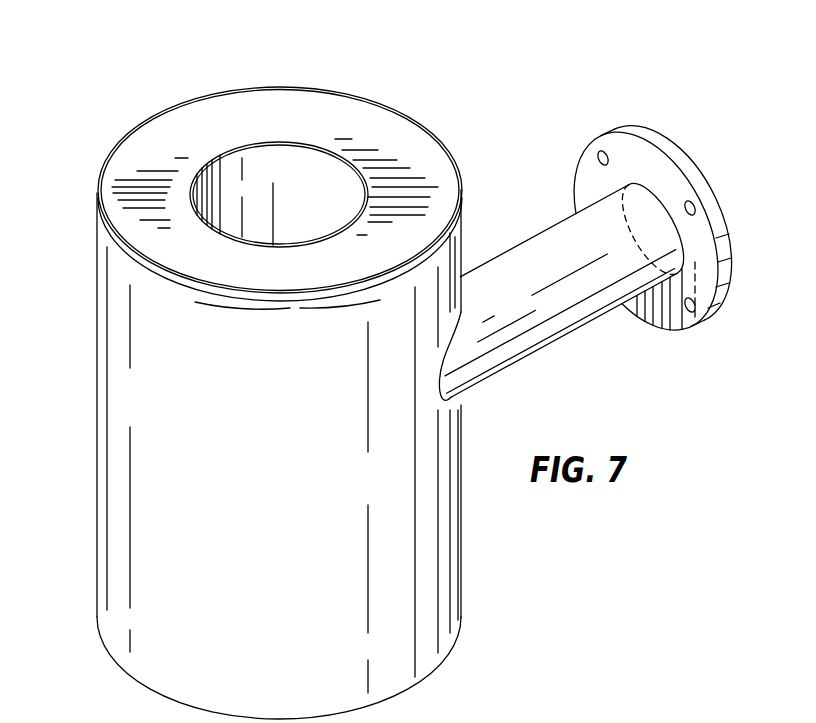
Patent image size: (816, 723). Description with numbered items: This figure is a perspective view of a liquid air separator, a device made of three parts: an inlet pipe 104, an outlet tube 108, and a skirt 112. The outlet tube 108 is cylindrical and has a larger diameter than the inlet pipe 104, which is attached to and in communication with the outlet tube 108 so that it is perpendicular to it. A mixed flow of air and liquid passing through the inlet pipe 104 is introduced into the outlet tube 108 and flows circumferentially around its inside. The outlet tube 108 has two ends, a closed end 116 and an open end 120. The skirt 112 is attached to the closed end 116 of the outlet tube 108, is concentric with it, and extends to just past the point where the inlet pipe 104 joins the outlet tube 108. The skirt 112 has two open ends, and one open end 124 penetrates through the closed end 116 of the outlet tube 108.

The inlet pipe 104 is at (560, 318).
The outlet tube 108 is at (425, 600).
The skirt 112 is at (305, 185).
The closed end 116 is at (142, 158).
The open end 120 is at (152, 692).
The open end of skirt 124 is at (227, 155).